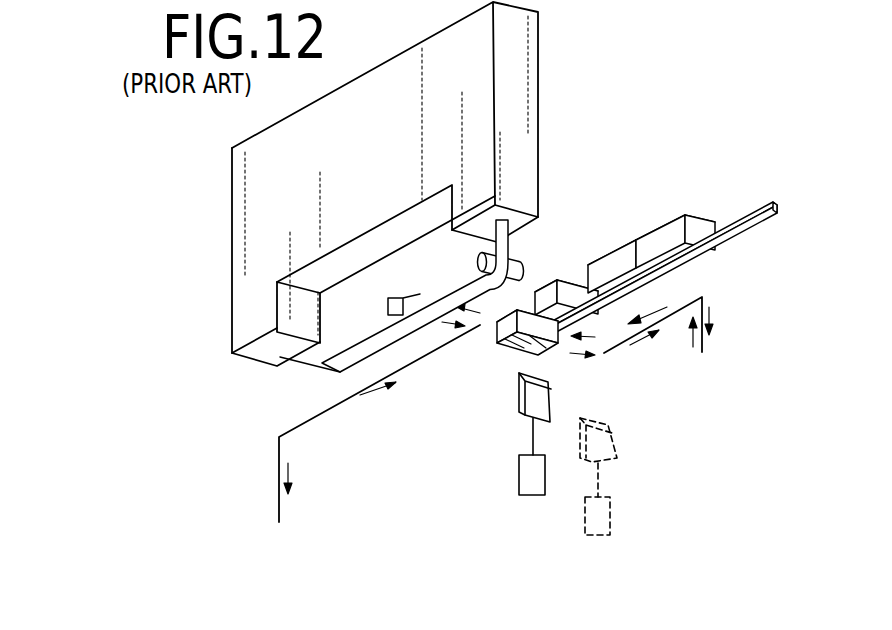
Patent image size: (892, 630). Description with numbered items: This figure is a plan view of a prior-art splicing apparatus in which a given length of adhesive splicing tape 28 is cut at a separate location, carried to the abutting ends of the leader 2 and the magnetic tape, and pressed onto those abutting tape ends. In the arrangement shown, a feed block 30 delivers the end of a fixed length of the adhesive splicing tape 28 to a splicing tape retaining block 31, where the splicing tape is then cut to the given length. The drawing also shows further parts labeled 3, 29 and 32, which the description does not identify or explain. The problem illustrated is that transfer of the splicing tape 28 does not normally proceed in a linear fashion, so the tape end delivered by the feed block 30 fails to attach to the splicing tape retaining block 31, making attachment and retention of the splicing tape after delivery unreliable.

The leader 2 is at (465, 288).
The slider block 3 is at (655, 235).
The adhesive splicing tape 28 is at (737, 233).
The stopper block 29 is at (505, 345).
The feed block 30 is at (633, 215).
The splicing tape retaining block 31 is at (585, 238).
The actuator 32 is at (625, 385).